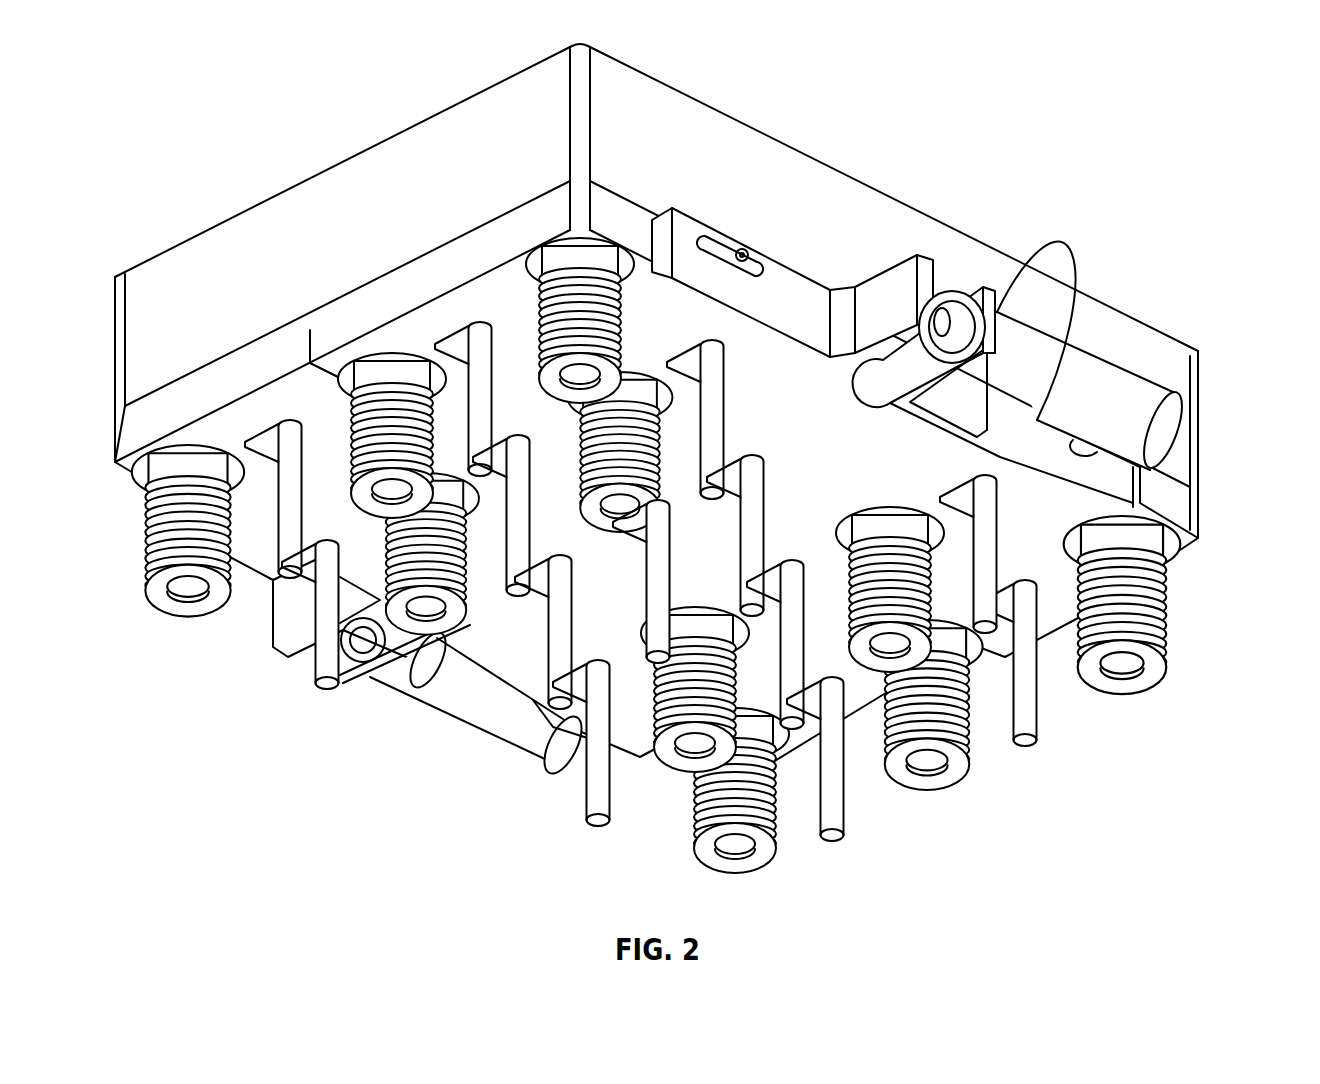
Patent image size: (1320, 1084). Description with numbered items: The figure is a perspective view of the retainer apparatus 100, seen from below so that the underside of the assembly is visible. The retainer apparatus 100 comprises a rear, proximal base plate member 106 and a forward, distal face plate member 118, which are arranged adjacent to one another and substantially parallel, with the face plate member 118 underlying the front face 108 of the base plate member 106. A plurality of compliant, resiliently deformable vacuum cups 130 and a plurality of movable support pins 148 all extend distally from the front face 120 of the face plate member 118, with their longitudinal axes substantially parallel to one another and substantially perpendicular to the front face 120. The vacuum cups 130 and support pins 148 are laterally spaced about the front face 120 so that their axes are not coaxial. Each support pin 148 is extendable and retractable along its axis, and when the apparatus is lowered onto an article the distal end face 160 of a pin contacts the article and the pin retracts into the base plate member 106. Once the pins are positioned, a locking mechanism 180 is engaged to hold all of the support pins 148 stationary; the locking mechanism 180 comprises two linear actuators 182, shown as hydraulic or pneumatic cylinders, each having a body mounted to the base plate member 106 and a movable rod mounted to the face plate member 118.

The retainer apparatus 100 is at (1112, 96).
The base plate member 106 is at (860, 156).
The front face 108 is at (185, 368).
The face plate member 118 is at (1210, 516).
The front face 120 is at (855, 462).
The vacuum cups 130 is at (1160, 695).
The support pins 148 is at (1040, 754).
The distal end face 160 is at (600, 828).
The locking mechanism 180 is at (1062, 321).
The linear actuators 182 is at (1172, 410).